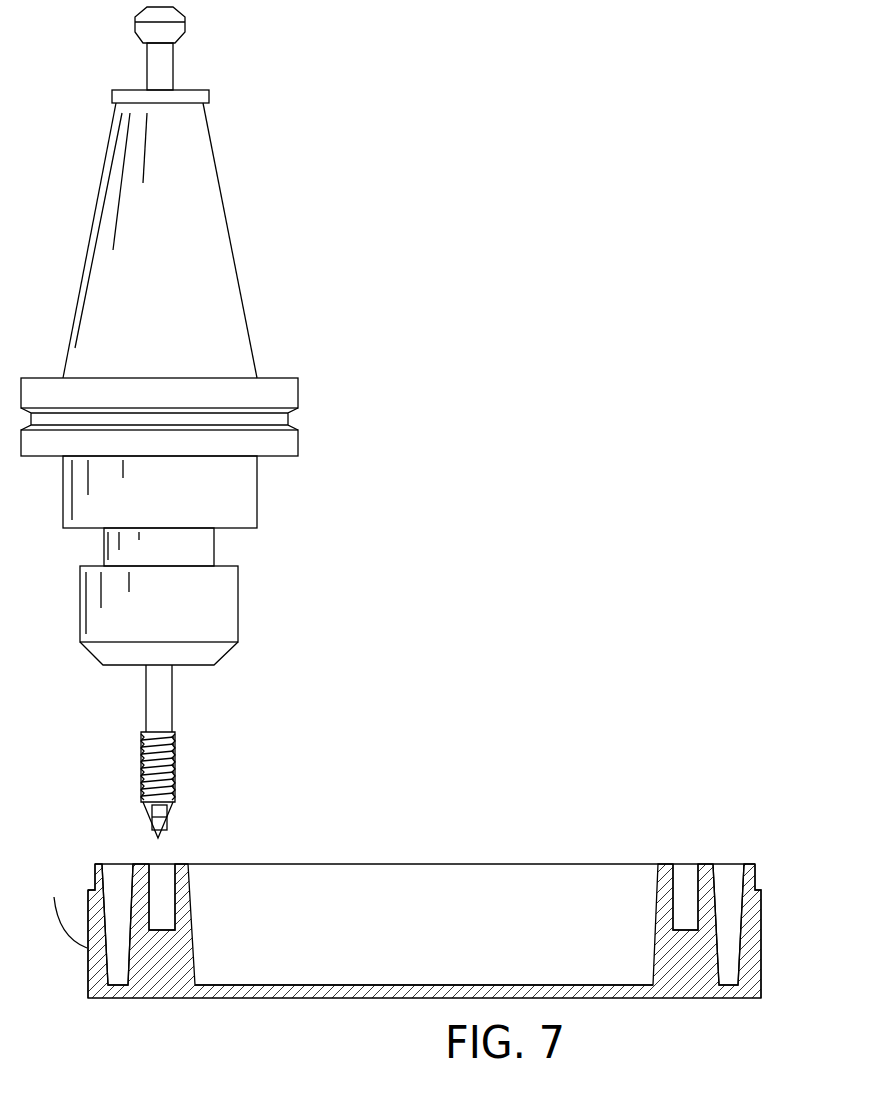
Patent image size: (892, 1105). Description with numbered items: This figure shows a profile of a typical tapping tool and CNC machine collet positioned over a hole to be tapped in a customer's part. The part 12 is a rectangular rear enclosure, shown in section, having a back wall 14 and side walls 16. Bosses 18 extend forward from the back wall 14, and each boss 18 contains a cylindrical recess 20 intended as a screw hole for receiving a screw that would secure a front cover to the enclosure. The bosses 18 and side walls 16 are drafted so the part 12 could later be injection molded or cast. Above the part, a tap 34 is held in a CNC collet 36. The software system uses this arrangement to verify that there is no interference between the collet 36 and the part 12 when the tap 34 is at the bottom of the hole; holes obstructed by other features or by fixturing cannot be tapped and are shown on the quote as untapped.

The part 12 is at (774, 855).
The back wall 14 is at (411, 985).
The side walls 16 is at (760, 930).
The bosses 18 is at (190, 903).
The cylindrical recess 20 is at (160, 870).
The tap 34 is at (163, 713).
The CNC collet 36 is at (210, 272).